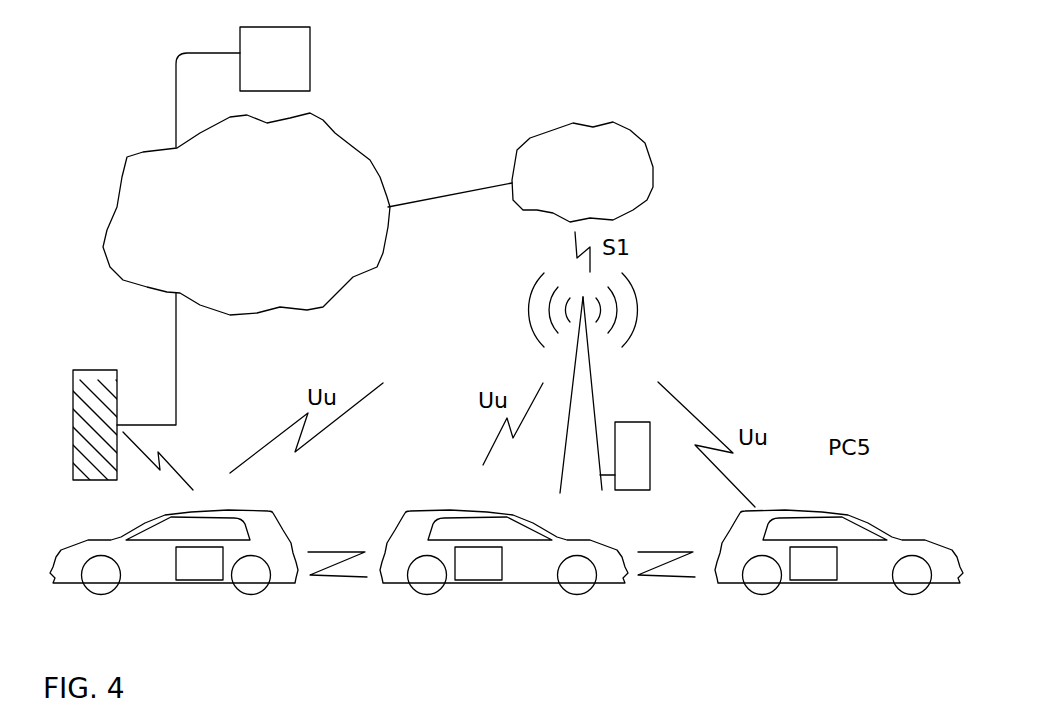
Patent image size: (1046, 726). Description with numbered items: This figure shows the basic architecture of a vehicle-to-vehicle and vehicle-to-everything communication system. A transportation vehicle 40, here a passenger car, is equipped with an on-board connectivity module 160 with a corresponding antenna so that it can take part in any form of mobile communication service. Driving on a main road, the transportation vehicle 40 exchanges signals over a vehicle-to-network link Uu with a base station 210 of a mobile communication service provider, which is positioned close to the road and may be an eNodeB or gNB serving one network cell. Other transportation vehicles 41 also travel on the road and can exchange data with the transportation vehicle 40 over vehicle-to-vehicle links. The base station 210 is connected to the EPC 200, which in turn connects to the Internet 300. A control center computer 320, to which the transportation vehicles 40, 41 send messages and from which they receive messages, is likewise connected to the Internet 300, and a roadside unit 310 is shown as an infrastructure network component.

The transportation vehicle 40 is at (530, 560).
The other transportation vehicles 41 is at (147, 560).
The on-board connectivity module 160 is at (202, 560).
The EPC 200 is at (607, 137).
The base station 210 is at (593, 405).
The Internet 300 is at (326, 161).
The roadside unit 310 is at (89, 370).
The control center computer 320 is at (309, 58).